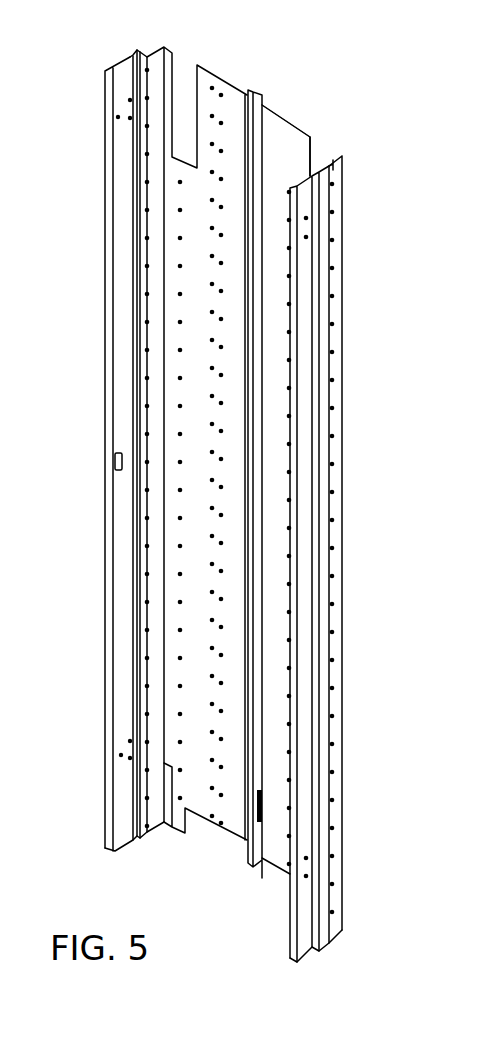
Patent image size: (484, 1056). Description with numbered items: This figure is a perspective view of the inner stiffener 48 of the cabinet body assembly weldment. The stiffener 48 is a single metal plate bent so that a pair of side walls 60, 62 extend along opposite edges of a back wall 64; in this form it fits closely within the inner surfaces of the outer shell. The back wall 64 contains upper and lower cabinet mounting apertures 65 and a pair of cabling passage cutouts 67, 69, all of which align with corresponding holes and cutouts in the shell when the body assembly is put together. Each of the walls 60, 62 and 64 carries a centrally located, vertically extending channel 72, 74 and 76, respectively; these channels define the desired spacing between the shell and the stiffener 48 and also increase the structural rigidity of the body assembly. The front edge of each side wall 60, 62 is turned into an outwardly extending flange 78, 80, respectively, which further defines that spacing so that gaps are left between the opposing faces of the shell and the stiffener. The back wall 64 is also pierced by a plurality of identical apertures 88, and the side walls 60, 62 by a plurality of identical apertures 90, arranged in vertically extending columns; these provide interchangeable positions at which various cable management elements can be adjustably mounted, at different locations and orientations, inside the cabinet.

The inner stiffener 48 is at (310, 100).
The side wall 60 is at (122, 849).
The side wall 62 is at (335, 931).
The back wall 64 is at (204, 820).
The upper cabinet mounting aperture 65 is at (260, 145).
The cabling passage cutout 67 is at (172, 83).
The cabling passage cutout 69 is at (312, 141).
The channel 72 is at (124, 54).
The channel 74 is at (316, 166).
The channel 76 is at (266, 90).
The outwardly extending flange 78 is at (105, 125).
The outwardly extending flange 80 is at (298, 263).
The apertures 88 is at (222, 320).
The apertures 90 is at (145, 430).